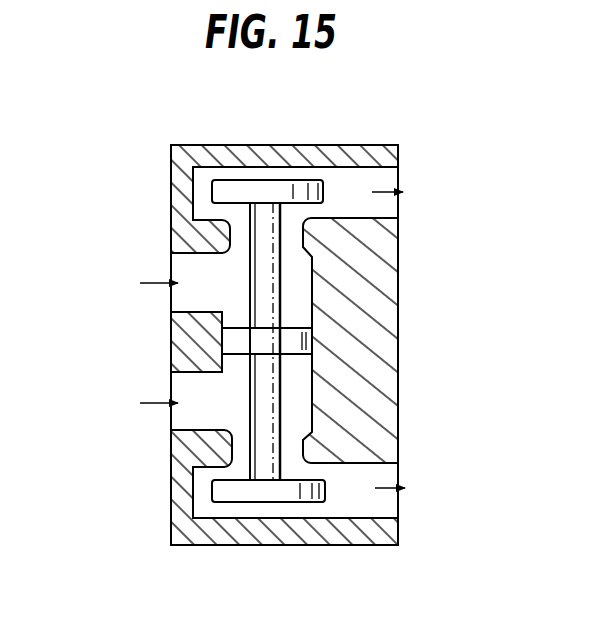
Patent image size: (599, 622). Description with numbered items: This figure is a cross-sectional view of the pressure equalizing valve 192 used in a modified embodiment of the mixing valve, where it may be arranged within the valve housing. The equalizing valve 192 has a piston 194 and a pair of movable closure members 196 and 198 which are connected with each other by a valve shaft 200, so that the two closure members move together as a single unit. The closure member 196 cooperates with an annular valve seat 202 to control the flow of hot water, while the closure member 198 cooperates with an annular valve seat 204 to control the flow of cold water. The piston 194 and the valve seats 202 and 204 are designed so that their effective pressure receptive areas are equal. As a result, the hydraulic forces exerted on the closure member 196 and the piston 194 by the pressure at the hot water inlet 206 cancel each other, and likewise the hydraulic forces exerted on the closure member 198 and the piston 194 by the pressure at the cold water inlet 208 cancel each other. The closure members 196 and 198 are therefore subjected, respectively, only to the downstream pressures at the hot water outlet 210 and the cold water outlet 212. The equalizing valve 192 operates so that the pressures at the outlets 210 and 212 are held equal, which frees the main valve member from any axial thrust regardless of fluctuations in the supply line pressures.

The pressure equalizing valve 192 is at (436, 158).
The piston 194 is at (313, 337).
The movable closure member 196 is at (272, 490).
The movable closure member 198 is at (282, 194).
The valve shaft 200 is at (276, 416).
The annular valve seat 202 is at (216, 462).
The annular valve seat 204 is at (222, 222).
The hot water inlet 206 is at (175, 382).
The cold water inlet 208 is at (173, 267).
The hot water outlet 210 is at (380, 504).
The cold water outlet 212 is at (380, 206).